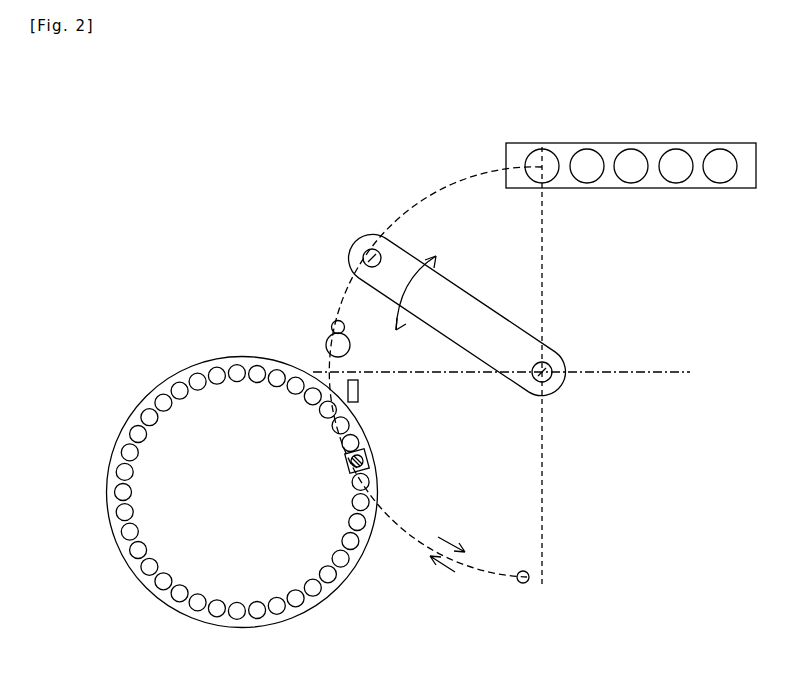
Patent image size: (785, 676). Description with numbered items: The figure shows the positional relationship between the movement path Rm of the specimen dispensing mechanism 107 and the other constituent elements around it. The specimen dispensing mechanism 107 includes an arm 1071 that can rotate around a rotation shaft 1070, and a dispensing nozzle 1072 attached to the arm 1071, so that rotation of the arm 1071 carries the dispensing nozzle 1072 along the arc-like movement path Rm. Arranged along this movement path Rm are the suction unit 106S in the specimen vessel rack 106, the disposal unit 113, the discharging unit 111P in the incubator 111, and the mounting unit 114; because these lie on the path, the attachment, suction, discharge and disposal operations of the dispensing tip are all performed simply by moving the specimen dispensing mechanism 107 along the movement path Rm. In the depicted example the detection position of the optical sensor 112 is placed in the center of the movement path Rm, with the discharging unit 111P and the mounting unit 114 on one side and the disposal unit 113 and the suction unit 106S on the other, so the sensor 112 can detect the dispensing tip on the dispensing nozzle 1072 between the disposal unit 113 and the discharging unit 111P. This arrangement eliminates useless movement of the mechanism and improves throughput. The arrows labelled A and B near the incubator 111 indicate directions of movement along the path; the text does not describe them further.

The specimen vessel rack 106 is at (622, 131).
The suction unit 106S is at (533, 149).
The specimen dispensing mechanism 107 is at (459, 318).
The rotation shaft 1070 is at (550, 380).
The arm 1071 is at (447, 304).
The dispensing nozzle 1072 is at (364, 246).
The incubator 111 is at (248, 492).
The discharging unit 111P is at (378, 456).
The sensor 112 is at (362, 390).
The disposal unit 113 is at (326, 340).
The mounting unit 114 is at (525, 584).
The movement path Rm is at (421, 207).
The rotation direction A is at (452, 534).
The rotation direction B is at (440, 578).